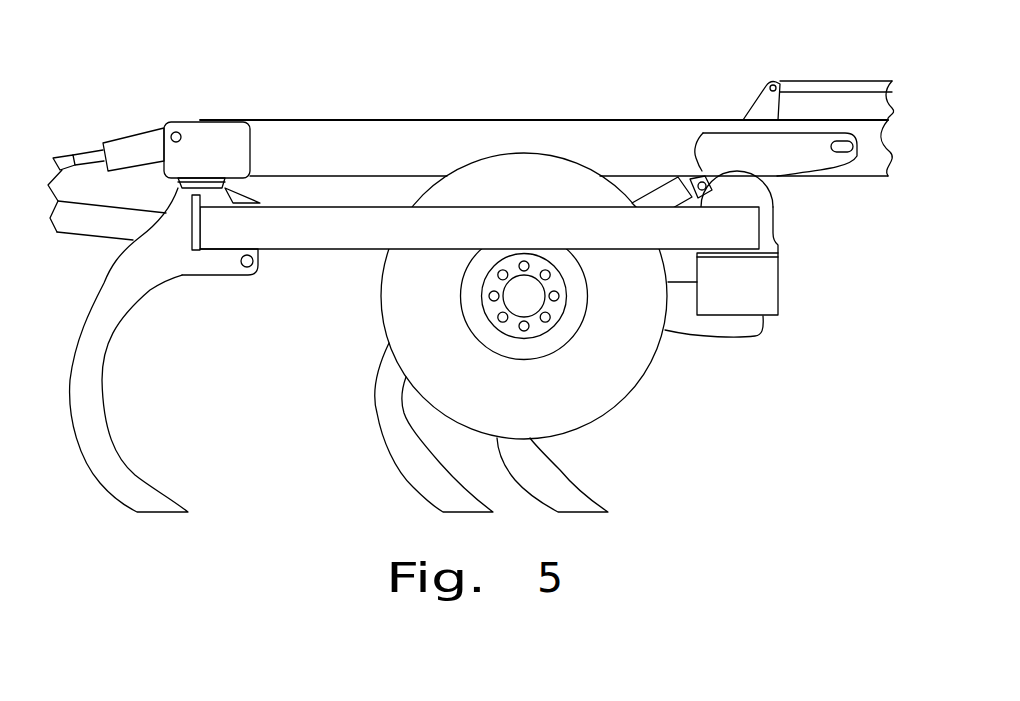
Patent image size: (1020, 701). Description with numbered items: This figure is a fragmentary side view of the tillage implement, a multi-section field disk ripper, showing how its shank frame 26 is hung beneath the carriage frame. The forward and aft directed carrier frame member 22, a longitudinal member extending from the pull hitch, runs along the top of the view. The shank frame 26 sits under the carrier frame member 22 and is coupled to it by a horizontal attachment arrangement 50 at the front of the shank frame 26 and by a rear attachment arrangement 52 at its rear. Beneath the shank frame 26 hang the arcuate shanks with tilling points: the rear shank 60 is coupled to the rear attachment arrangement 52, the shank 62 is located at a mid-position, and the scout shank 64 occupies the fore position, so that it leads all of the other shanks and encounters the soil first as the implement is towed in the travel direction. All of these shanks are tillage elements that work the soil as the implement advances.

The carrier frame member 22 is at (400, 118).
The shank frame 26 is at (325, 250).
The horizontal attachment arrangement 50 is at (735, 105).
The rear attachment arrangement 52 is at (204, 105).
The rear shank 60 is at (177, 497).
The mid-position shank 62 is at (450, 502).
The scout shank 64 is at (588, 497).